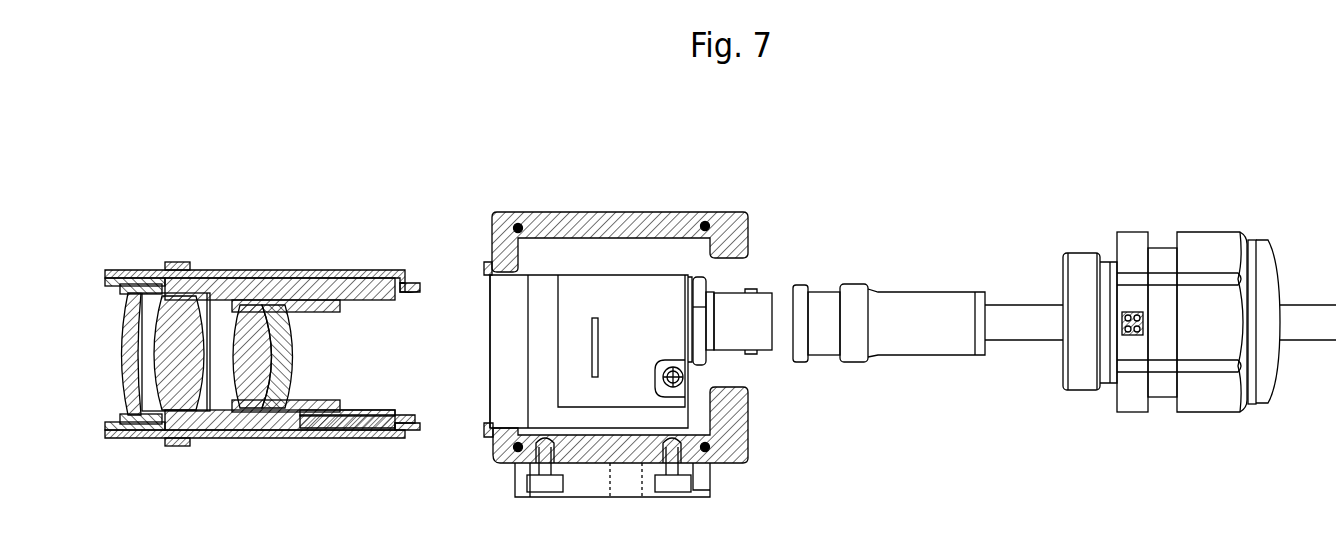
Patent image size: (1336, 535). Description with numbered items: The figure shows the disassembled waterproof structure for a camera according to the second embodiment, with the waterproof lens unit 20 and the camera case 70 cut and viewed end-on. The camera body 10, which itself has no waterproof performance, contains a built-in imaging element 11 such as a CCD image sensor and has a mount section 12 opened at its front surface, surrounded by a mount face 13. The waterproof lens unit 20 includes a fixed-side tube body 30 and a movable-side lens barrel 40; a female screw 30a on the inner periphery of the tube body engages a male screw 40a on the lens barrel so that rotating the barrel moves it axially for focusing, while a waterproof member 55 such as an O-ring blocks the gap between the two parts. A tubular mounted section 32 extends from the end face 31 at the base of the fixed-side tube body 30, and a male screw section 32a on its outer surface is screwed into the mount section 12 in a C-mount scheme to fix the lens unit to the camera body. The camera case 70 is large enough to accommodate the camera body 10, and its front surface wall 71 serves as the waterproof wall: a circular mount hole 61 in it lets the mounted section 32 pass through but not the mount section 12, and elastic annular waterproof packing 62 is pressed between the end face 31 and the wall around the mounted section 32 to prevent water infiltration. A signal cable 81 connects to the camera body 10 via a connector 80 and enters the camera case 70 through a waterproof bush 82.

The camera body 10 is at (605, 326).
The imaging element 11 is at (600, 345).
The mount section 12 is at (490, 405).
The mount face 13 is at (490, 305).
The waterproof lens unit 20 is at (282, 339).
The fixed-side tube body 30 is at (282, 315).
The female screw 30a is at (357, 415).
The end face 31 is at (405, 283).
The mounted section 32 is at (416, 295).
The male screw section 32a is at (416, 290).
The movable-side lens barrel 40 is at (259, 401).
The male screw 40a is at (327, 440).
The waterproof member 55 is at (292, 276).
The mount hole 61 is at (488, 366).
The waterproof packing 62 is at (405, 432).
The camera case 70 is at (591, 298).
The front surface wall 71 is at (487, 262).
The connector 80 is at (822, 287).
The signal cable 81 is at (1318, 342).
The bush 82 is at (1205, 414).